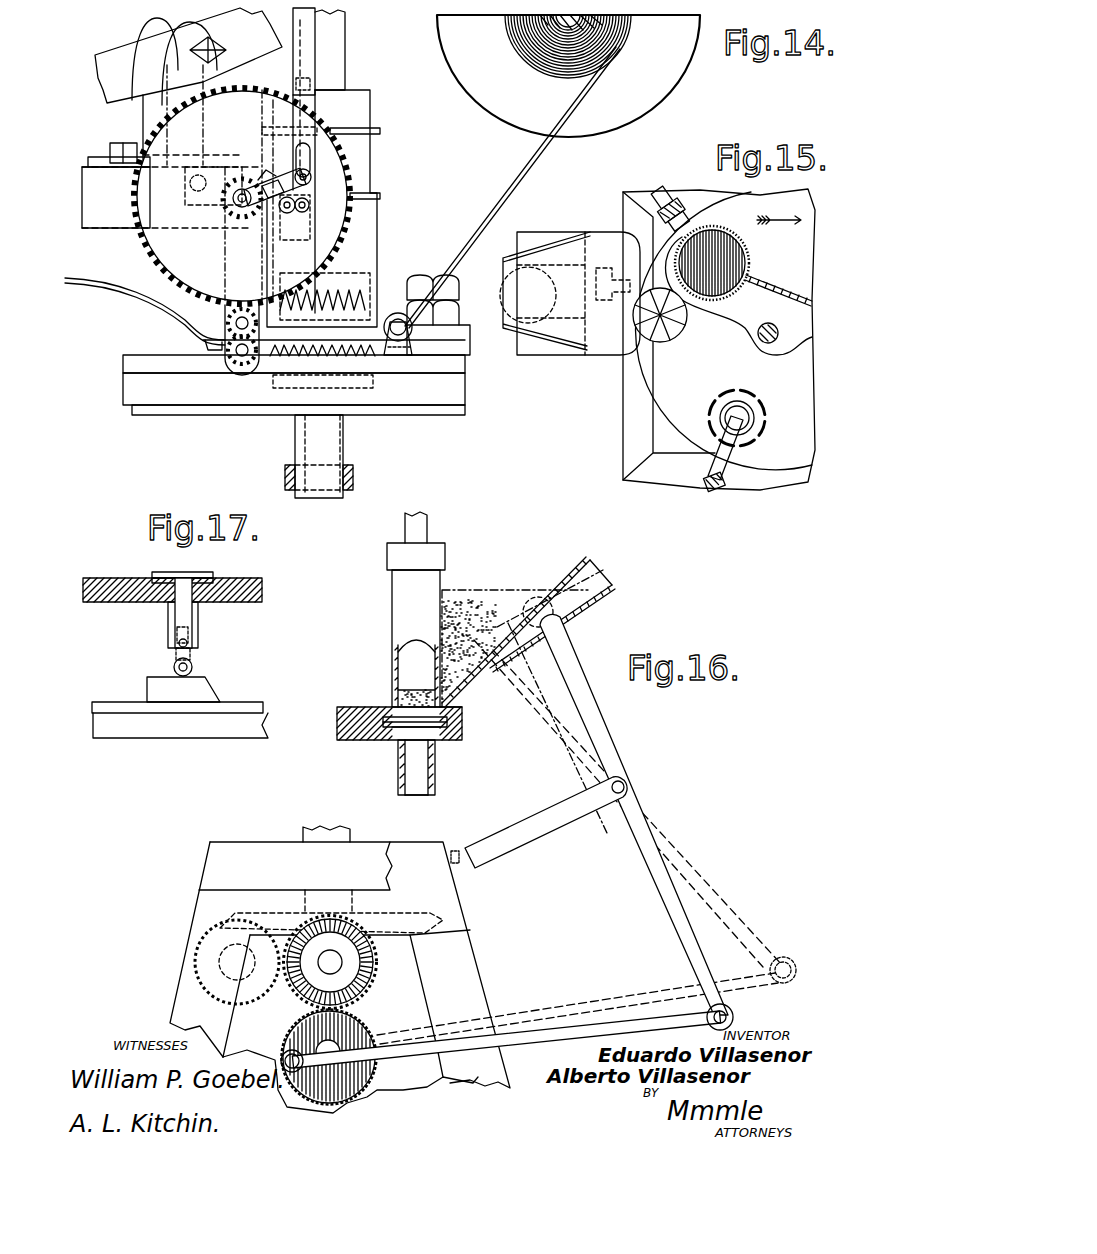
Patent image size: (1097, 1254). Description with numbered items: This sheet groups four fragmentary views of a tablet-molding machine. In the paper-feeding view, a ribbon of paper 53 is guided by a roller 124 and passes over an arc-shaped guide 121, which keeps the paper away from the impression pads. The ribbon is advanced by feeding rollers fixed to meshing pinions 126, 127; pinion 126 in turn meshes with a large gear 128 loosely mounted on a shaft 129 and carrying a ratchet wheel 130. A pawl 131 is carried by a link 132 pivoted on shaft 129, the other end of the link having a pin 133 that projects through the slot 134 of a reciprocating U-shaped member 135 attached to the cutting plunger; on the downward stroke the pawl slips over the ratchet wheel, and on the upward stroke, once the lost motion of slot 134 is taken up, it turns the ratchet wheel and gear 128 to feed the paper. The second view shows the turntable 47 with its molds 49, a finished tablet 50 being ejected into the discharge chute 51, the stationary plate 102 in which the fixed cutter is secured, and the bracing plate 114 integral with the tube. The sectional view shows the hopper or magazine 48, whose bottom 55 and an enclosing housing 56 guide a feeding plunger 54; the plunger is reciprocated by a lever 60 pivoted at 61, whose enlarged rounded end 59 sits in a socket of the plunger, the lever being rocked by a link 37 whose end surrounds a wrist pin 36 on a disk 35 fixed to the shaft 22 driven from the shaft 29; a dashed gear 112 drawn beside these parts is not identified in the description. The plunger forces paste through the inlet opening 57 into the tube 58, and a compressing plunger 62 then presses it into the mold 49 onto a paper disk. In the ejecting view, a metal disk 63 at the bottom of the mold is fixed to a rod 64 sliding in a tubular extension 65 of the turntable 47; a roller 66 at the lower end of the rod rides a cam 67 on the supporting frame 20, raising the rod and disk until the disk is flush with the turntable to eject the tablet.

In FIG. 14, the reciprocating U-shaped member 135 is at (305, 62).
In FIG. 14, the pawl 131 is at (270, 173).
In FIG. 14, the slot 134 is at (305, 157).
In FIG. 14, the pin 133 is at (312, 178).
In FIG. 14, the large gear 128 is at (337, 220).
In FIG. 14, the paper ribbon 53 is at (480, 232).
In FIG. 14, the ratchet wheel 130 is at (225, 212).
In FIG. 14, the shaft 129 is at (250, 222).
In FIG. 14, the link 132 is at (279, 215).
In FIG. 14, the arc-shaped guide 121 is at (662, 92).
In FIG. 14, the roller 124 is at (394, 318).
In FIG. 14, the pinion 126 is at (227, 328).
In FIG. 14, the pinion 127 is at (233, 367).
In FIG. 15, the plate 102 is at (738, 258).
In FIG. 15, the bracing plate 114 is at (765, 290).
In FIG. 15, the discharge chute 51 is at (612, 340).
In FIG. 15, the finished tablet 50 is at (672, 338).
In FIG. 15, the turntable 47 is at (695, 400).
In FIG. 17, the turntable 47 is at (262, 588).
In FIG. 16, the turntable 47 is at (340, 726).
In FIG. 17, the mold 49 is at (208, 580).
In FIG. 16, the mold 49 is at (357, 745).
In FIG. 17, the rod 64 is at (185, 613).
In FIG. 16, the rod 64 is at (420, 765).
In FIG. 17, the cam 67 is at (153, 685).
In FIG. 17, the roller 66 is at (192, 667).
In FIG. 17, the supporting frame 20 is at (98, 705).
In FIG. 16, the supporting frame 20 is at (470, 988).
In FIG. 16, the enclosing housing 56 is at (578, 566).
In FIG. 16, the feeding plunger 54 is at (584, 580).
In FIG. 16, the tube 58 is at (395, 625).
In FIG. 16, the enlarged rounded end 59 is at (528, 616).
In FIG. 16, the bottom of magazine 55 is at (574, 606).
In FIG. 16, the compressing plunger 62 is at (415, 672).
In FIG. 16, the hopper or magazine 48 is at (455, 712).
In FIG. 16, the inlet opening 57 is at (462, 712).
In FIG. 16, the metal disk 63 is at (385, 741).
In FIG. 16, the tubular extension 65 is at (438, 792).
In FIG. 16, the lever 60 is at (605, 722).
In FIG. 16, the pivot 61 is at (625, 782).
In FIG. 16, the gear 112 is at (250, 970).
In FIG. 16, the shaft 29 is at (340, 968).
In FIG. 16, the wrist pin 36 is at (284, 1058).
In FIG. 16, the shaft 22 is at (340, 1043).
In FIG. 16, the link 37 is at (585, 1033).
In FIG. 16, the disk 35 is at (345, 1082).